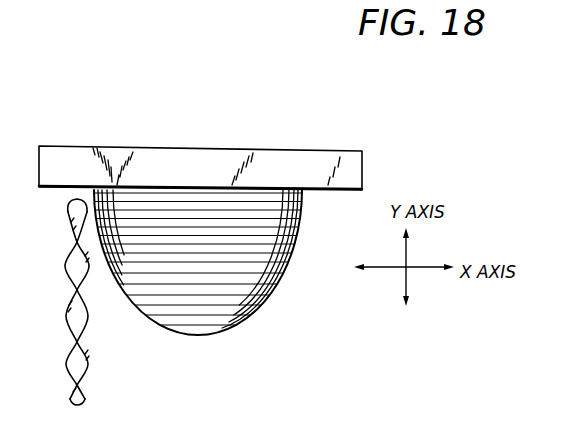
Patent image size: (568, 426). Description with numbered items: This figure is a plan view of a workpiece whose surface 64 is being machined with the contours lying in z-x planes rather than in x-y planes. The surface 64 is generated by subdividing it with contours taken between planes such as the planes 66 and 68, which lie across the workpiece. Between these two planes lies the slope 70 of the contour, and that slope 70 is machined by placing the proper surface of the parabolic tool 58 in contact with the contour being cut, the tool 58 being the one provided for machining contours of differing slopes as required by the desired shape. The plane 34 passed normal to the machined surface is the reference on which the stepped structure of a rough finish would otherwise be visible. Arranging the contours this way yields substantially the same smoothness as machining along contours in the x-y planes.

The plane 34 is at (331, 150).
The tool 58 is at (80, 326).
The surface 64 is at (221, 267).
The plane 66 is at (300, 204).
The plane 68 is at (290, 253).
The slope 70 is at (297, 212).